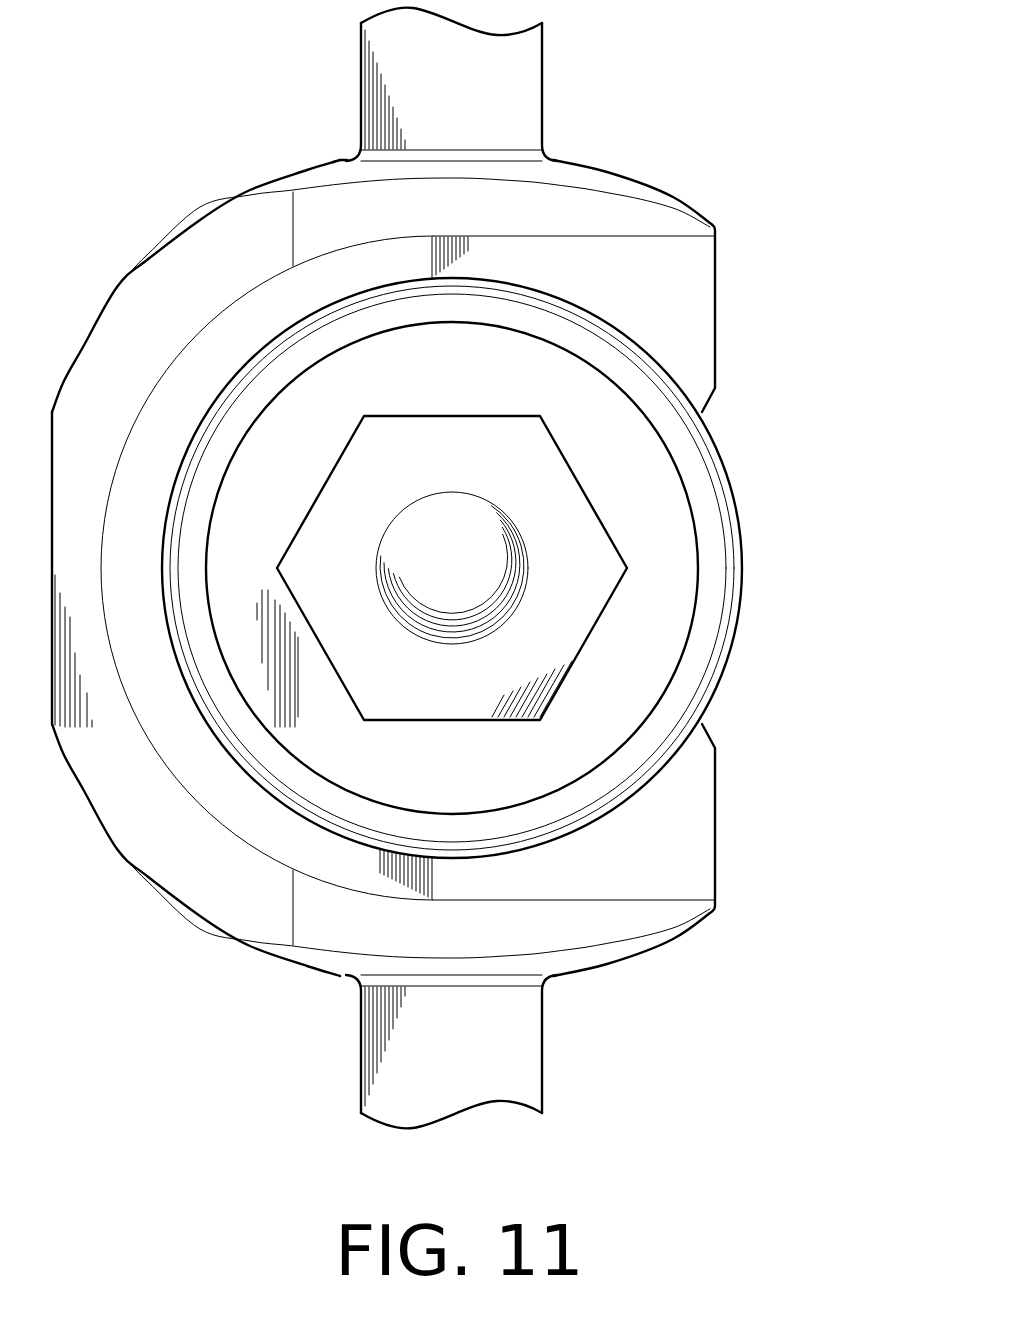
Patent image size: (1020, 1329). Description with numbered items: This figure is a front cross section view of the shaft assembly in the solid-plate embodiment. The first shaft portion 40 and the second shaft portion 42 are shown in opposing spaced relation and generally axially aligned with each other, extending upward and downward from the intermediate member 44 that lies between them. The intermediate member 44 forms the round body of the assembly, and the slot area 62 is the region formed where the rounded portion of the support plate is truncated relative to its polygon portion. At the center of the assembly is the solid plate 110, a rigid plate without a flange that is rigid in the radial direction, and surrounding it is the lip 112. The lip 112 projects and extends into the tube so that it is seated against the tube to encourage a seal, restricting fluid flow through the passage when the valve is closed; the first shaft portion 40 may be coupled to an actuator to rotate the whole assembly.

The first shaft portion 40 is at (520, 93).
The second shaft portion 42 is at (522, 1065).
The intermediate member 44 is at (255, 182).
The slot area 62 is at (212, 363).
The solid plate 110 is at (645, 528).
The lip 112 is at (695, 425).